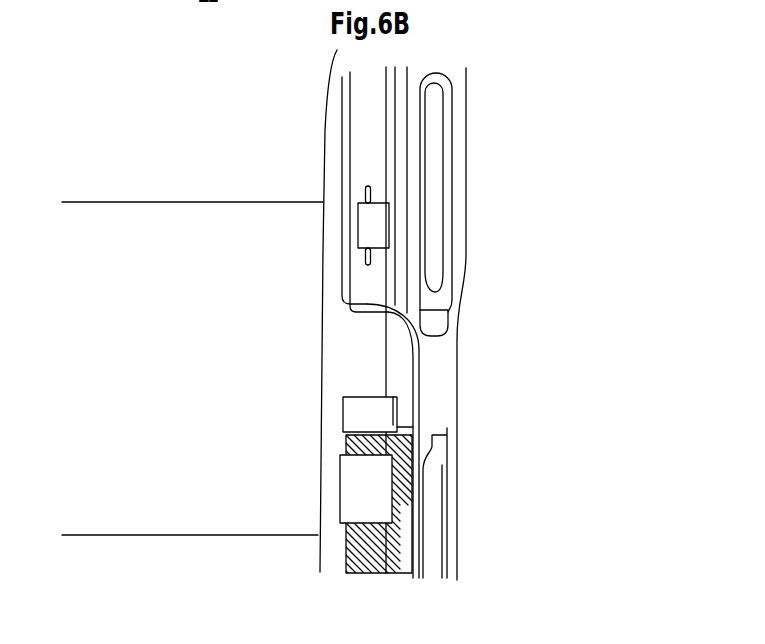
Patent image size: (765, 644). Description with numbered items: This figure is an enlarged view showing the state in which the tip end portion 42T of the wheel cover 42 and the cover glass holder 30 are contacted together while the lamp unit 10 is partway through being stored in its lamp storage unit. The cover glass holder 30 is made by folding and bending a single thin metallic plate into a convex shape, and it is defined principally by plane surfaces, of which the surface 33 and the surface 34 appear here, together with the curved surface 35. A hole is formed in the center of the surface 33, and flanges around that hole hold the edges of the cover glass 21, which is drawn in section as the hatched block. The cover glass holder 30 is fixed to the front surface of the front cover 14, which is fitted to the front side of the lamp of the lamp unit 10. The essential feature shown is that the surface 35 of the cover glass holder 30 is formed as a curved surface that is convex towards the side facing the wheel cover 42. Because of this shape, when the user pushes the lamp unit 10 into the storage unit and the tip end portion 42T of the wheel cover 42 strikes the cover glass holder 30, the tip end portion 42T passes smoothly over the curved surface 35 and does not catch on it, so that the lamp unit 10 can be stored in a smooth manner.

The lamp unit 10 is at (358, 378).
The front cover 14 is at (484, 320).
The cover glass 21 is at (350, 553).
The cover glass holder 30 is at (486, 426).
The surface 33 is at (435, 387).
The surface 34 is at (355, 275).
The curved surface 35 is at (393, 327).
The wheel cover 42 is at (460, 195).
The tip end portion 42T is at (442, 312).